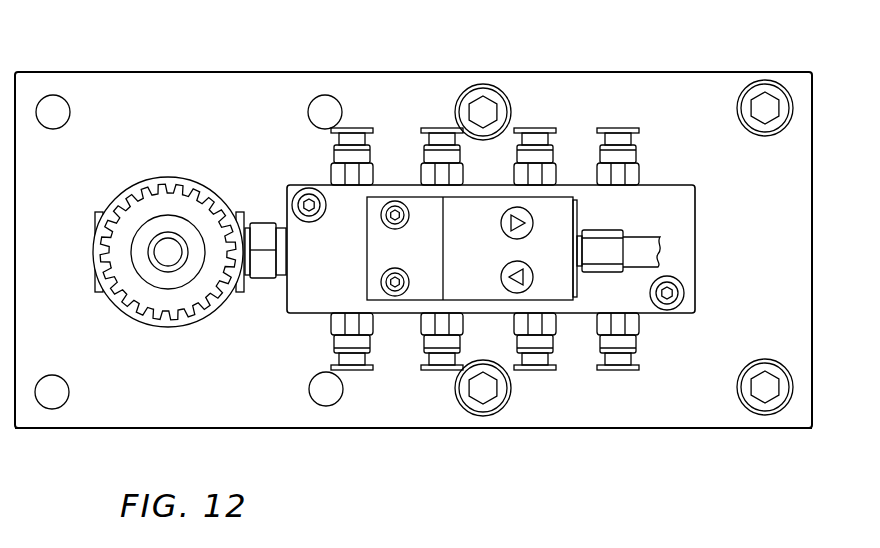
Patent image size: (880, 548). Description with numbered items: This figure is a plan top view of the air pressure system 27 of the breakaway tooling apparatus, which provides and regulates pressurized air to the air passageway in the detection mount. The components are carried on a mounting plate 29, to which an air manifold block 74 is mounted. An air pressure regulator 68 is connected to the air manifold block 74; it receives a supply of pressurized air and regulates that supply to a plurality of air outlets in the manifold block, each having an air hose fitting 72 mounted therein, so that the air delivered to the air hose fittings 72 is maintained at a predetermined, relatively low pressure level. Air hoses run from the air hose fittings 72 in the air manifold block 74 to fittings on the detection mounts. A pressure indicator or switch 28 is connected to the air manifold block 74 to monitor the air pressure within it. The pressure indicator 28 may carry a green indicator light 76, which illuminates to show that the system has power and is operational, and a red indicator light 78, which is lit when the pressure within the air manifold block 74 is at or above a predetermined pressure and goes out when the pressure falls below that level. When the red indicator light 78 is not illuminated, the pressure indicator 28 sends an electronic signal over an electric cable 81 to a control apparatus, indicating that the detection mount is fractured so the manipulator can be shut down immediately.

The air pressure system 27 is at (669, 67).
The mounting plate 29 is at (652, 416).
The air pressure regulator 68 is at (168, 177).
The air hose fittings 72 is at (357, 128).
The air manifold block 74 is at (698, 203).
The pressure indicator or switch 28 is at (367, 288).
The red indicator light 78 is at (537, 221).
The green indicator light 76 is at (537, 279).
The electric cable 81 is at (662, 240).